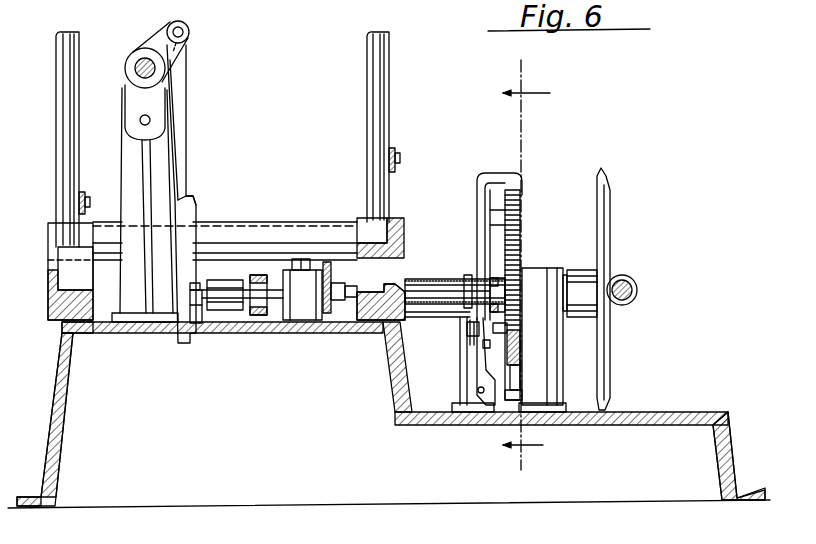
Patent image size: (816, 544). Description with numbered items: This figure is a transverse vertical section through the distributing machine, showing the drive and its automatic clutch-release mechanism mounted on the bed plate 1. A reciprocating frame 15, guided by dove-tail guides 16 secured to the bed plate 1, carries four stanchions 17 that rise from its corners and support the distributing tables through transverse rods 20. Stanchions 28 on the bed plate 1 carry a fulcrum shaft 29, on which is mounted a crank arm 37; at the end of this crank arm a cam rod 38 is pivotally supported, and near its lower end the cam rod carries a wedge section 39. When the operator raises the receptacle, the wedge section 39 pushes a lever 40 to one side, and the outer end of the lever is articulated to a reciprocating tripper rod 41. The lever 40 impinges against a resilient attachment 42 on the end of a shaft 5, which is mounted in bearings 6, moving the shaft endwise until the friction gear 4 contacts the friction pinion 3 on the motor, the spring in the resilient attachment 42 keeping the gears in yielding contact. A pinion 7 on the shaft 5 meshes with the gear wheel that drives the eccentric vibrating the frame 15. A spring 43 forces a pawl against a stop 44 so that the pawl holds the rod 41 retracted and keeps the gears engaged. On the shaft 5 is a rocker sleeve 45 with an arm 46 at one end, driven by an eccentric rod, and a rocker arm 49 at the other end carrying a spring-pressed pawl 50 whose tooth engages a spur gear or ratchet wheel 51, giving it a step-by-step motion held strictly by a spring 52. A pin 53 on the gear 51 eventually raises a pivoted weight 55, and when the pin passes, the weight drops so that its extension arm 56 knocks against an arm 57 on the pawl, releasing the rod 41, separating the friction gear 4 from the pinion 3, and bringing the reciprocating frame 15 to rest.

The bed plate 1 is at (65, 425).
The friction pinion 3 is at (640, 290).
The friction gear 4 is at (606, 213).
The shaft 5 is at (430, 290).
The bearings 6 is at (560, 264).
The pinion 7 is at (258, 343).
The reciprocating frame 15 is at (50, 301).
The dove-tail guides 16 is at (88, 335).
The stanchions 17 is at (62, 40).
The transverse rods 20 is at (84, 197).
The stanchions 28 is at (130, 155).
The fulcrum shaft 29 is at (125, 67).
The crank arm 37 is at (165, 40).
The cam rod 38 is at (190, 116).
The wedge section 39 is at (196, 216).
The lever 40 is at (200, 288).
The reciprocating tripper rod 41 is at (445, 318).
The resilient attachment 42 is at (225, 290).
The spring 43 is at (478, 380).
The stop 44 is at (487, 349).
The rocker sleeve 45 is at (408, 290).
The arm 46 is at (331, 271).
The rocker arm 49 is at (480, 193).
The spring-pressed pawl 50 is at (500, 233).
The spur gear or ratchet wheel 51 is at (520, 346).
The spring 52 is at (520, 373).
The pin 53 is at (507, 330).
The pivoted weight 55 is at (528, 305).
The extension arm 56 is at (472, 340).
The arm 57 is at (474, 340).